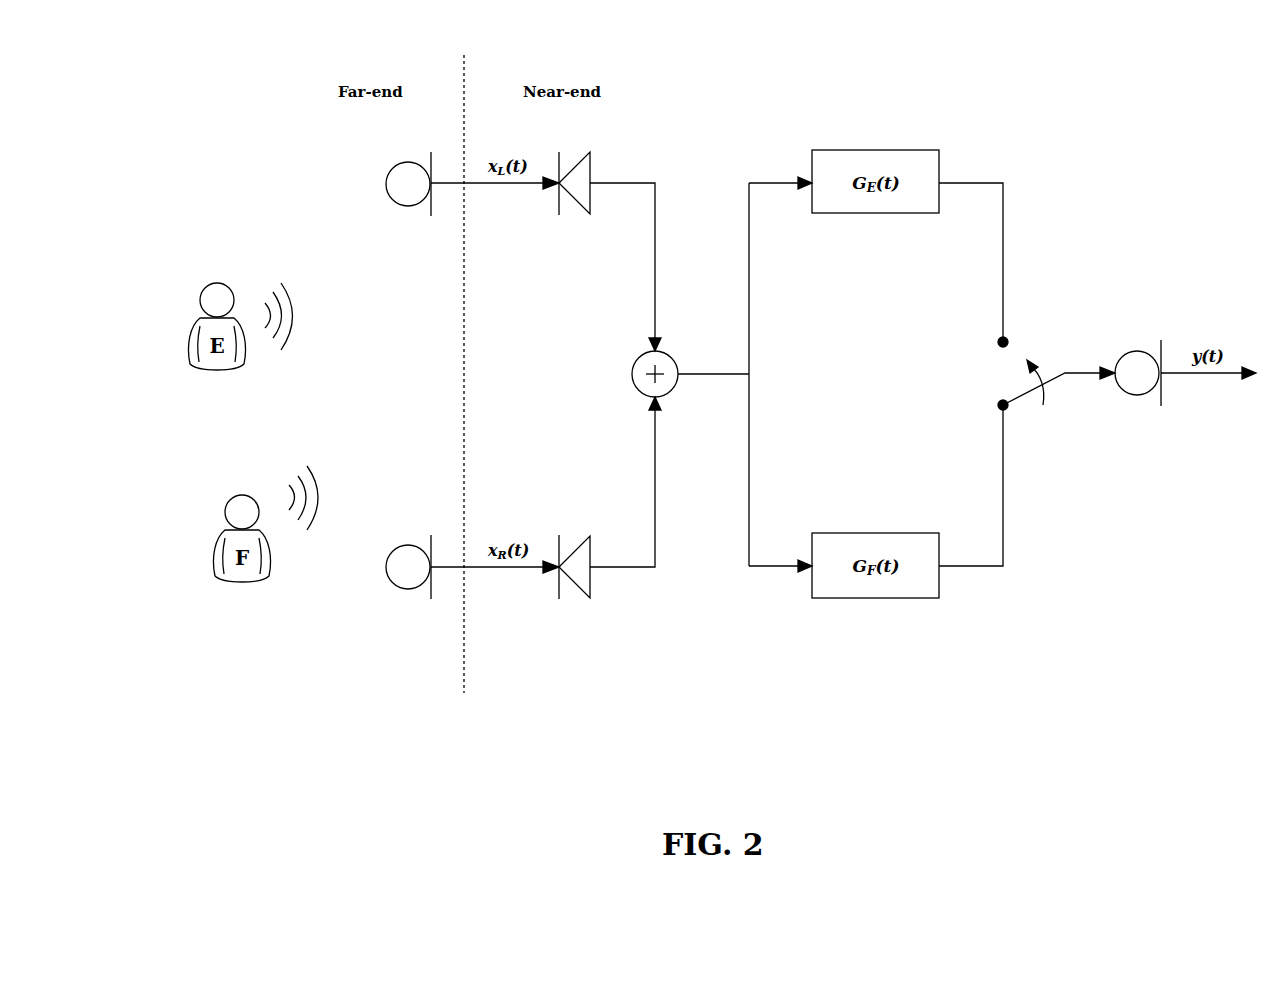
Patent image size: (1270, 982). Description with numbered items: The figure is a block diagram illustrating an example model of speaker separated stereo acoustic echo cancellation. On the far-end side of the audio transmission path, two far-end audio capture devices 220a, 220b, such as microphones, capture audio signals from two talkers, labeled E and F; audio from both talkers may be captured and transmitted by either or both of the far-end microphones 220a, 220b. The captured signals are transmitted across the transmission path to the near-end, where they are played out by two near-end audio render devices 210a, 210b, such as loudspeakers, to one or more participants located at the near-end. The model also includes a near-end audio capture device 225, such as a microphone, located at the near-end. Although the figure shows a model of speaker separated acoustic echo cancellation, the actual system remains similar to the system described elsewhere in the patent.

The far-end audio capture device 220a is at (408, 207).
The far-end audio capture device 220b is at (408, 590).
The near-end audio render device 210a is at (581, 205).
The near-end audio render device 210b is at (581, 589).
The near-end audio capture device 225 is at (1137, 396).